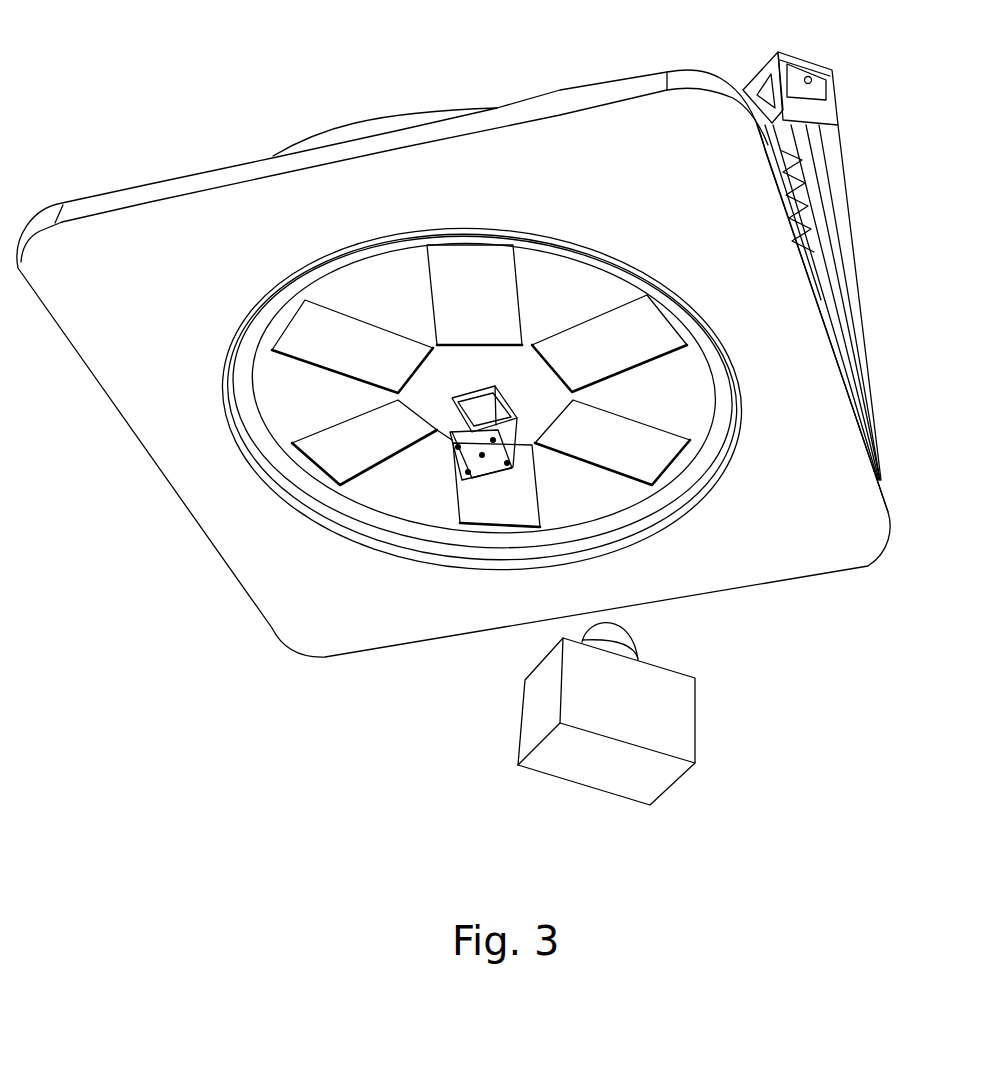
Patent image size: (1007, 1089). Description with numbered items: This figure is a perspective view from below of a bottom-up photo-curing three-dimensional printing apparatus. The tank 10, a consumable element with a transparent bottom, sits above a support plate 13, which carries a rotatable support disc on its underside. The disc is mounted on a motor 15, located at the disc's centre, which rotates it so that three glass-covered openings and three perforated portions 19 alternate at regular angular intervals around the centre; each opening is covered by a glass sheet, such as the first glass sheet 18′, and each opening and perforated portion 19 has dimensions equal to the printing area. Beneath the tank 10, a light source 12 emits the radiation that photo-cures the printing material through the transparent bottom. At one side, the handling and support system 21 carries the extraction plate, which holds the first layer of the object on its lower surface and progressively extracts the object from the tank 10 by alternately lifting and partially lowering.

The tank 10 is at (380, 128).
The light source 12 is at (668, 715).
The support plate 13 is at (137, 228).
The motor 15 is at (475, 413).
The first glass sheet 18′ is at (637, 457).
The perforated portion 19 is at (313, 337).
The handling and support system 21 is at (835, 222).